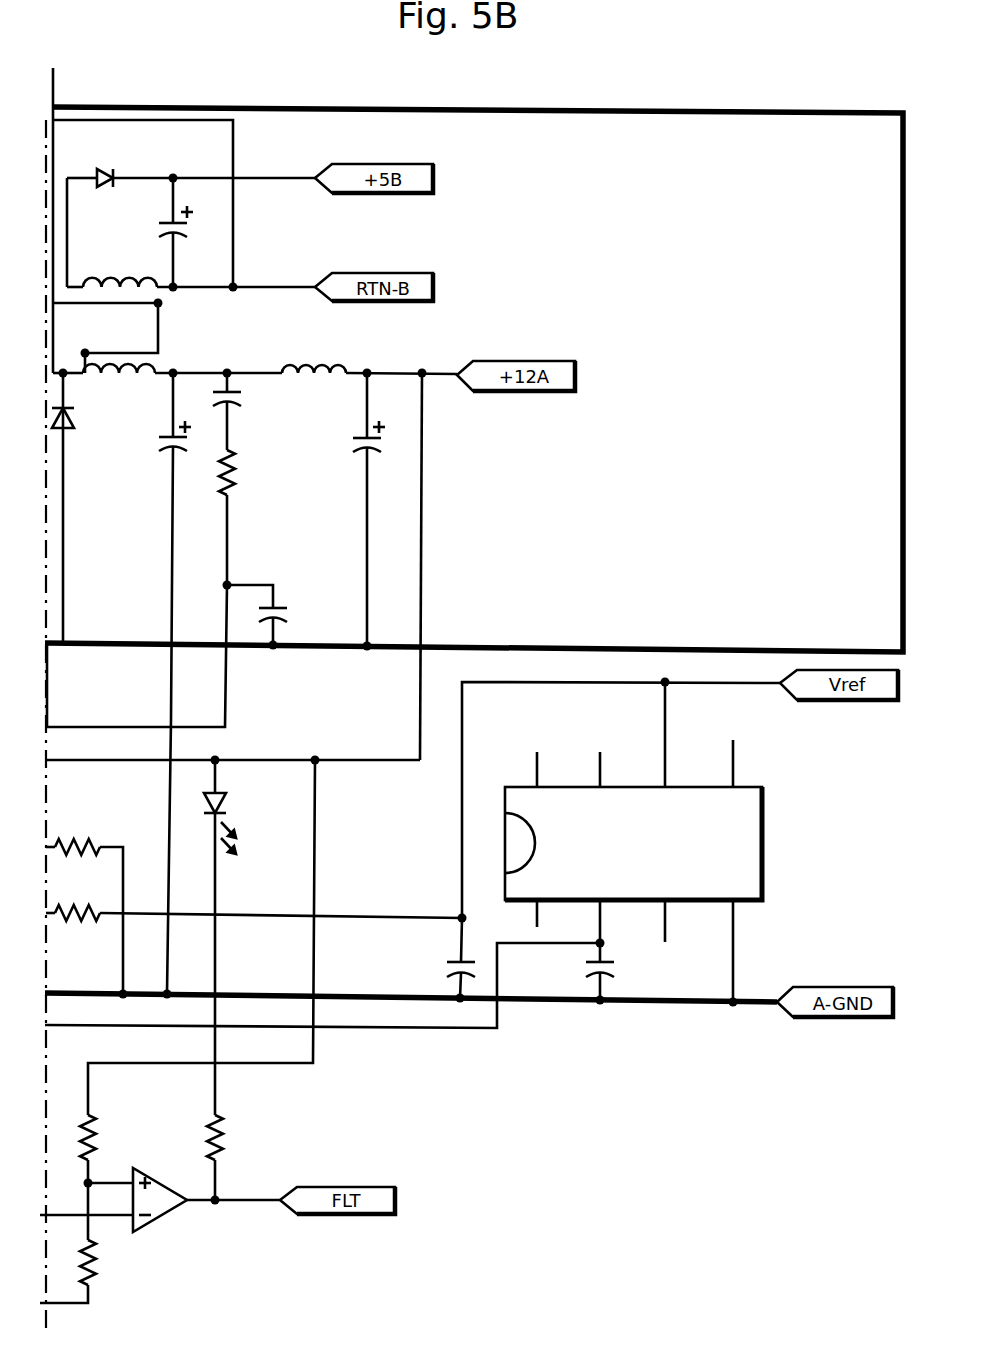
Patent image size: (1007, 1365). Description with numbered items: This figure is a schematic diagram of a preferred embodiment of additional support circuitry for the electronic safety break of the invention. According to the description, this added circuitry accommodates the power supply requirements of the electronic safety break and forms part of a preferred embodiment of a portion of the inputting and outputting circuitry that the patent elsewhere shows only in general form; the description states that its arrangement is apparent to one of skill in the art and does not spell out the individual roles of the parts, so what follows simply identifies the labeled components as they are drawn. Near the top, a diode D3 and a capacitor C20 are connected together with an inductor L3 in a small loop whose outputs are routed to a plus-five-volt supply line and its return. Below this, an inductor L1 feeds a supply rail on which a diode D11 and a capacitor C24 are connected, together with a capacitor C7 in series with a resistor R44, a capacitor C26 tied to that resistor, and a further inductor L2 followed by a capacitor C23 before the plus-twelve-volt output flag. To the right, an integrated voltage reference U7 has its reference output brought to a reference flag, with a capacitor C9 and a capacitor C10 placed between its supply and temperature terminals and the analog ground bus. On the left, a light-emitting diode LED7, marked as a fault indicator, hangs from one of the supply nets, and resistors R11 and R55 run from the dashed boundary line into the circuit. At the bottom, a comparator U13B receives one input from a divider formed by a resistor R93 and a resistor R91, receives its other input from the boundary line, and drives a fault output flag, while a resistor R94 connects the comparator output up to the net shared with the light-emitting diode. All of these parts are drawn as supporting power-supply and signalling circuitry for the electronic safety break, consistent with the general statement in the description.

The diode 1N4148 D3 is at (191, 157).
The capacitor 2.2uF/16V C20 is at (134, 232).
The inductor 6T L3 is at (191, 276).
The inductor 12T L1 is at (119, 383).
The inductor 100uH L2 is at (311, 359).
The diode MUR120 D11 is at (105, 508).
The capacitor 100uF/20V C24 is at (131, 683).
The capacitor 100nF C7 is at (253, 411).
The resistor 1K R44 is at (141, 588).
The capacitor 1nF C26 is at (282, 615).
The capacitor 100uF/20V C23 is at (325, 509).
The voltage reference REF02 U7 is at (668, 842).
The fault indicator LED LED7 is at (252, 937).
The resistor 10K R11 is at (84, 906).
The resistor 4.99K R55 is at (254, 938).
The capacitor 100nF C9 is at (425, 958).
The capacitor 100nF C10 is at (568, 971).
The resistor 100K R93 is at (111, 1175).
The resistor 100K R91 is at (89, 1273).
The resistor 1K R94 is at (196, 1152).
The comparator LM393 U13B is at (160, 1217).